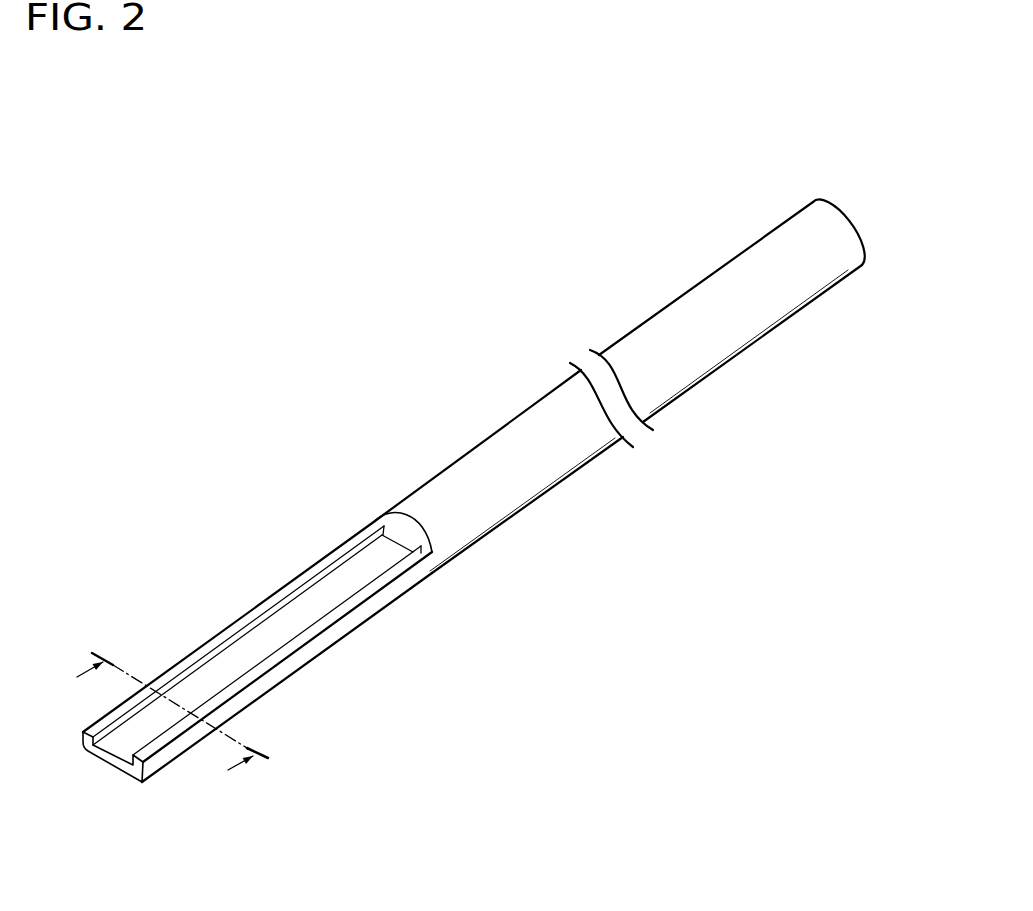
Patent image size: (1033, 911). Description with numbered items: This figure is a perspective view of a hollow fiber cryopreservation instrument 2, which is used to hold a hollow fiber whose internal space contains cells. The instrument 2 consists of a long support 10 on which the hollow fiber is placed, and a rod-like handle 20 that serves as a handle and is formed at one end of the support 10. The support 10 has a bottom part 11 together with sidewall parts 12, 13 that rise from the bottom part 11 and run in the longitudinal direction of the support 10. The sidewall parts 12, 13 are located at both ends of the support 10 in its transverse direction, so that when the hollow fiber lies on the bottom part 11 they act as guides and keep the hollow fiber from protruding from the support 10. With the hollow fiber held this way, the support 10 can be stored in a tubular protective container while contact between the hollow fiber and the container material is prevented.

The hollow fiber cryopreservation instrument 2 is at (285, 358).
The support 10 is at (274, 651).
The bottom part 11 is at (313, 608).
The sidewall part 12 is at (332, 561).
The sidewall part 13 is at (388, 580).
The handle 20 is at (550, 455).